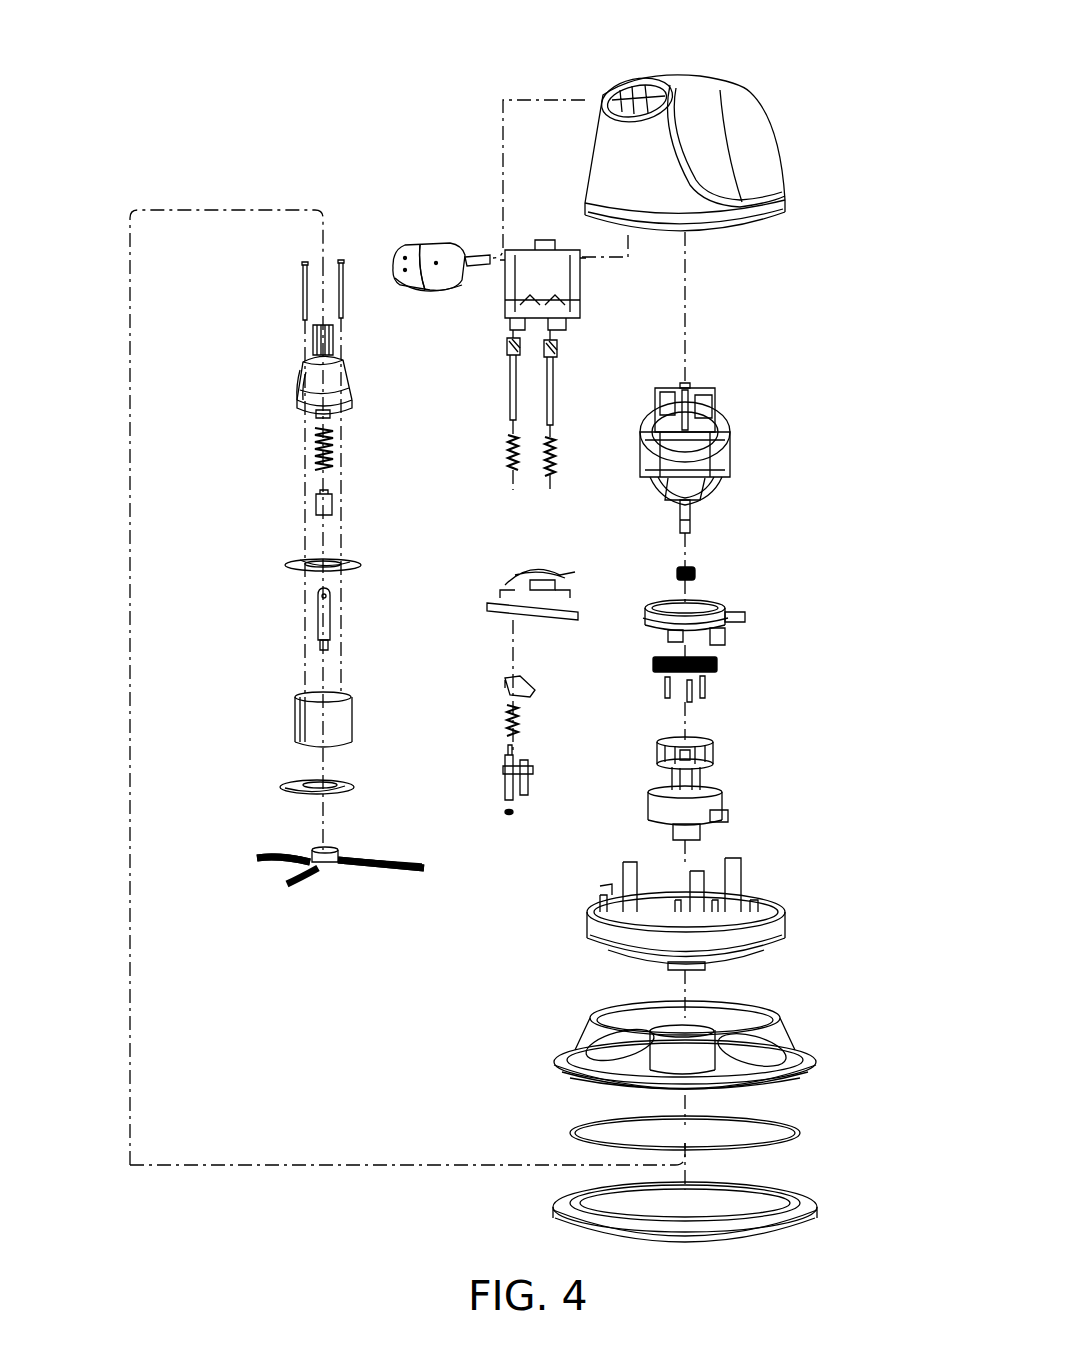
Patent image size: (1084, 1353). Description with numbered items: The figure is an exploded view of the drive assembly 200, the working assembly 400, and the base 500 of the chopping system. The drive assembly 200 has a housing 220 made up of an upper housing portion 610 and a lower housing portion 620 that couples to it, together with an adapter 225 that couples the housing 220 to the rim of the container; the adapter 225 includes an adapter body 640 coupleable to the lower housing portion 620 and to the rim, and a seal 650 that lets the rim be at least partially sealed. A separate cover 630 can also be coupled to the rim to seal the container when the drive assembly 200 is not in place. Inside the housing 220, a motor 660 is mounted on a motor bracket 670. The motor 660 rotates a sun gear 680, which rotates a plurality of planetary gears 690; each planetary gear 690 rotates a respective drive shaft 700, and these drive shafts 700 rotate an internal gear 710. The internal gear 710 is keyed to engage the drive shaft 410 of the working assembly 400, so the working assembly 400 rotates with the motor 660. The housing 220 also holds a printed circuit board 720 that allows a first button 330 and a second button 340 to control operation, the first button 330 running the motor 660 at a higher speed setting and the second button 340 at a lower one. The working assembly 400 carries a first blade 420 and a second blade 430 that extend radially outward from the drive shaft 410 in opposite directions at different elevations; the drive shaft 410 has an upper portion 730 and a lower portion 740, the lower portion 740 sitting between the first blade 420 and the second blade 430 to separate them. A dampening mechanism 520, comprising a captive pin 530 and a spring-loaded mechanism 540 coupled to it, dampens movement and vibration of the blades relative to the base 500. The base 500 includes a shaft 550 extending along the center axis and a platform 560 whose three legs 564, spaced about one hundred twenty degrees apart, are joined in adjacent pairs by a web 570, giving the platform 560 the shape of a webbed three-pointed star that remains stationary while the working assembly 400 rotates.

The drive assembly 200 is at (782, 92).
The housing 220 is at (760, 158).
The adapter 225 is at (527, 1040).
The first button 330 is at (398, 243).
The second button 340 is at (437, 245).
The working assembly 400 is at (222, 390).
The drive shaft 410 is at (363, 420).
The first blade 420 is at (360, 565).
The second blade 430 is at (295, 785).
The base 500 is at (268, 925).
The dampening mechanism 520 is at (265, 485).
The captive pin 530 is at (340, 500).
The spring-loaded mechanism 540 is at (310, 450).
The shaft 550 is at (322, 612).
The platform 560 is at (330, 890).
The legs 564 is at (400, 860).
The web 570 is at (355, 875).
The upper housing portion 610 is at (688, 80).
The lower housing portion 620 is at (782, 925).
The cover 630 is at (820, 1195).
The adapter body 640 is at (790, 1040).
The seal 650 is at (800, 1128).
The motor 660 is at (735, 440).
The motor bracket 670 is at (745, 612).
The sun gear 680 is at (700, 571).
The planetary gears 690 is at (730, 664).
The drive shafts 700 is at (720, 690).
The internal gear 710 is at (738, 802).
The printed circuit board 720 is at (485, 582).
The upper portion 730 is at (347, 390).
The lower portion 740 is at (340, 716).